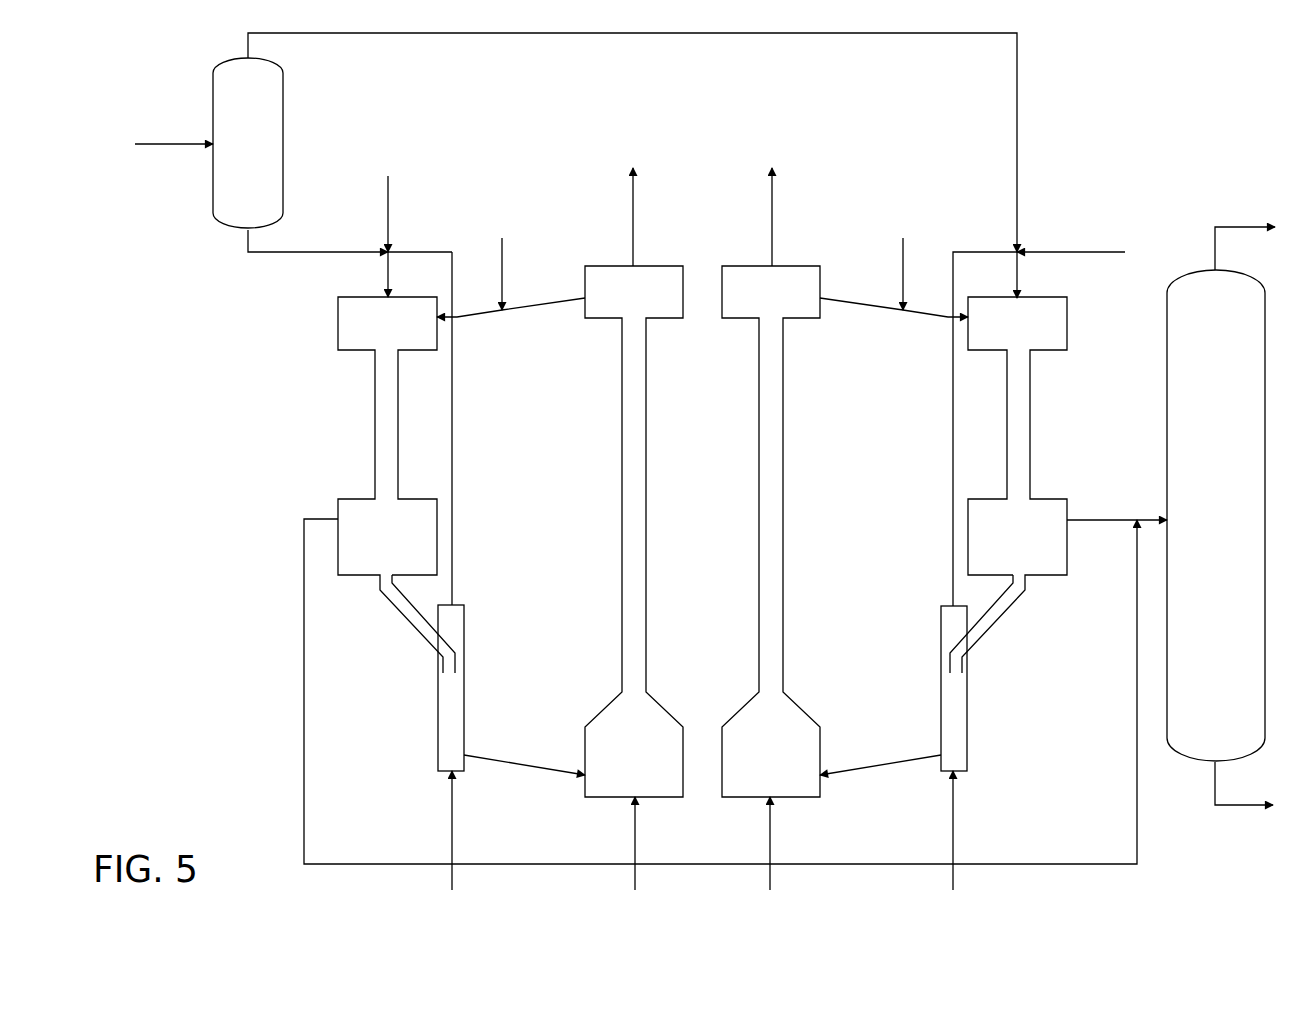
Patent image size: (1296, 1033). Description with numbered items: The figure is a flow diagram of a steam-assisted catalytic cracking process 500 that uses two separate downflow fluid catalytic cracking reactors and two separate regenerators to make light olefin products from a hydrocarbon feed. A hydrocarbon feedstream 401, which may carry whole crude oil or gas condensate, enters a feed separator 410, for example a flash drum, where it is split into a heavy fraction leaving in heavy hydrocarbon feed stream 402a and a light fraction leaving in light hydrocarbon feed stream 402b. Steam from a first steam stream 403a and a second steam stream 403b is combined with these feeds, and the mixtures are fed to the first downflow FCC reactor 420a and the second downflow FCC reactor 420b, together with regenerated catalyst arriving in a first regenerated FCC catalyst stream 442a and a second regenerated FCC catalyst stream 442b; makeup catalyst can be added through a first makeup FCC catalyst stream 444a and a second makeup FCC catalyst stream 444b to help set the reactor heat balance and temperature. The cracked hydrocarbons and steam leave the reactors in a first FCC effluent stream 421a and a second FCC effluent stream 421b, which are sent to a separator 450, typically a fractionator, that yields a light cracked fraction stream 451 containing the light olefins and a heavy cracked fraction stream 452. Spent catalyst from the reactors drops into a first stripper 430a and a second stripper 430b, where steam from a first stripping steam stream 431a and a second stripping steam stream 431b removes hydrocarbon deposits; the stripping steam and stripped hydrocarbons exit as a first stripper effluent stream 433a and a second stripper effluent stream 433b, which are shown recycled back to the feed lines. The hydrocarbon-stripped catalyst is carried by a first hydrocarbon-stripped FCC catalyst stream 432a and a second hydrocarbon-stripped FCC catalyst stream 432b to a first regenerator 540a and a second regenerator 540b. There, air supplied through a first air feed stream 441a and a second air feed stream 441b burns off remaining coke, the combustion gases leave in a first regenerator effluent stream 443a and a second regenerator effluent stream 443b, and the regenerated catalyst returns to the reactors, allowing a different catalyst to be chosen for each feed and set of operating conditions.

The steam-assisted catalytic cracking process 500 is at (1173, 83).
The hydrocarbon feedstream 401 is at (170, 143).
The feed separator 410 is at (272, 157).
The heavy hydrocarbon feed stream 402a is at (325, 256).
The light hydrocarbon feed stream 402b is at (580, 36).
The first steam stream 403a is at (390, 212).
The second steam stream 403b is at (1063, 250).
The first downflow FCC reactor 420a is at (375, 428).
The second downflow FCC reactor 420b is at (1031, 396).
The first FCC effluent stream 421a is at (304, 805).
The second FCC effluent stream 421b is at (1076, 518).
The first stripper 430a is at (438, 712).
The second stripper 430b is at (968, 712).
The first stripping steam stream 431a is at (452, 820).
The second stripping steam stream 431b is at (953, 820).
The first hydrocarbon-stripped FCC catalyst stream 432a is at (490, 755).
The second hydrocarbon-stripped FCC catalyst stream 432b is at (916, 755).
The first stripper effluent stream 433a is at (453, 468).
The second stripper effluent stream 433b is at (952, 468).
The first air feed stream 441a is at (634, 833).
The second air feed stream 441b is at (769, 834).
The first regenerated FCC catalyst stream 442a is at (522, 312).
The second regenerated FCC catalyst stream 442b is at (878, 318).
The first regenerator effluent stream 443a is at (632, 200).
The second regenerator effluent stream 443b is at (770, 210).
The first makeup FCC catalyst stream 444a is at (503, 250).
The second makeup FCC catalyst stream 444b is at (902, 254).
The first regenerator 540a is at (666, 771).
The second regenerator 540b is at (803, 771).
The separator 450 is at (1238, 535).
The light cracked fraction stream 451 is at (1238, 225).
The heavy cracked fraction stream 452 is at (1240, 808).